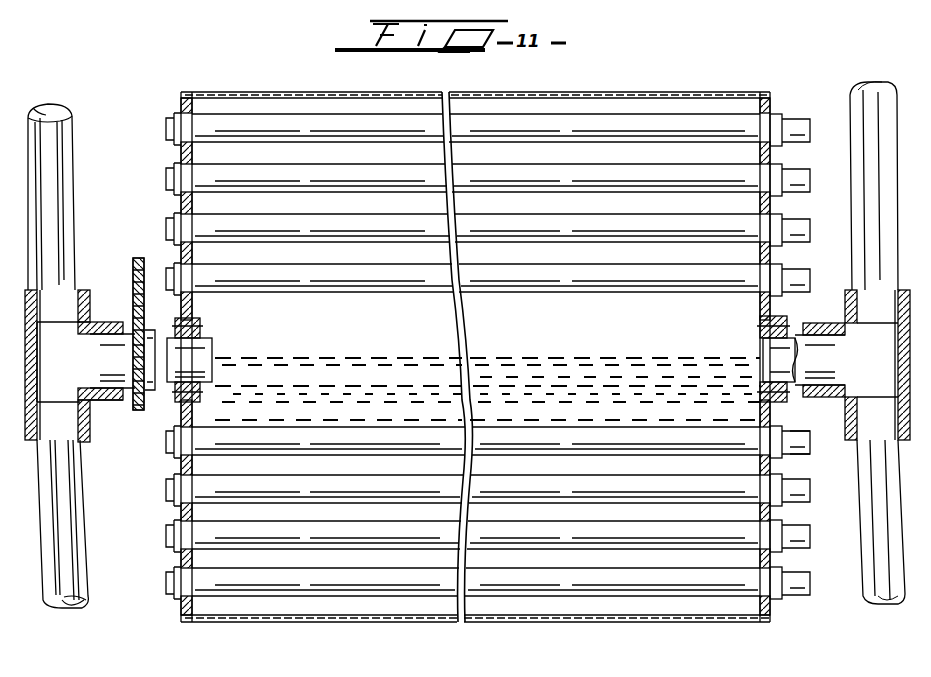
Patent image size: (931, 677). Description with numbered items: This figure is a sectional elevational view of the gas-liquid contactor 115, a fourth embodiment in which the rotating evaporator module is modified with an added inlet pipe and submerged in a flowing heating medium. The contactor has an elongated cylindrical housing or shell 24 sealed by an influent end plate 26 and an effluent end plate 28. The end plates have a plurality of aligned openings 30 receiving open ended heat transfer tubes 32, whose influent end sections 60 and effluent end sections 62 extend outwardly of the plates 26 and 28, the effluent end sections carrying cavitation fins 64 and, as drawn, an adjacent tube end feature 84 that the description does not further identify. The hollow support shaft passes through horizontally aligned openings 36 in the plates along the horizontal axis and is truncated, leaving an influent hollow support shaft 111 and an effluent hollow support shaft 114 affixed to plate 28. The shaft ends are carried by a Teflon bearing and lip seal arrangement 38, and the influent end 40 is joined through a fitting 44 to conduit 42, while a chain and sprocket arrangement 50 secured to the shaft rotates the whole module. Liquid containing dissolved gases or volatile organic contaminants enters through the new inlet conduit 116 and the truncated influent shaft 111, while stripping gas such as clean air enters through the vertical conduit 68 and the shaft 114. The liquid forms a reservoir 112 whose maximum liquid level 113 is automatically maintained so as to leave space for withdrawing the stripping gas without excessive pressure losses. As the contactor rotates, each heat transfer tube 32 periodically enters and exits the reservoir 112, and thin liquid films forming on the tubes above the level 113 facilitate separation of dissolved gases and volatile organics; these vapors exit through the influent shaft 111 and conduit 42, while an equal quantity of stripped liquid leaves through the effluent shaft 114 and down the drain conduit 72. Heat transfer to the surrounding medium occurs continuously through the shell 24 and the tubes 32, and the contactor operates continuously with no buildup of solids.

The cylindrical housing 24 is at (676, 92).
The influent end plate 26 is at (186, 246).
The effluent end plate 28 is at (772, 203).
The aligned openings 30 is at (193, 122).
The heat transfer tubes 32 is at (617, 100).
The horizontally aligned openings 36 is at (205, 332).
The bearing and lip seal arrangement 38 is at (115, 400).
The influent end 40 is at (92, 330).
The conduit 42 is at (45, 185).
The fitting 44 is at (45, 390).
The chain and sprocket arrangement 50 is at (143, 328).
The influent end sections 60 is at (165, 128).
The effluent end sections 62 is at (784, 116).
The cavitation fins 64 is at (808, 530).
The vertical effluent conduit 68 is at (868, 180).
The drain conduit 72 is at (888, 480).
The shaft collar 84 is at (806, 440).
The truncated influent hollow support shaft 111 is at (155, 395).
The liquid reservoir 112 is at (487, 380).
The maximum liquid level 113 is at (540, 377).
The effluent hollow support shaft 114 is at (786, 338).
The gas-liquid contactor 115 is at (578, 72).
The inlet conduit 116 is at (65, 505).